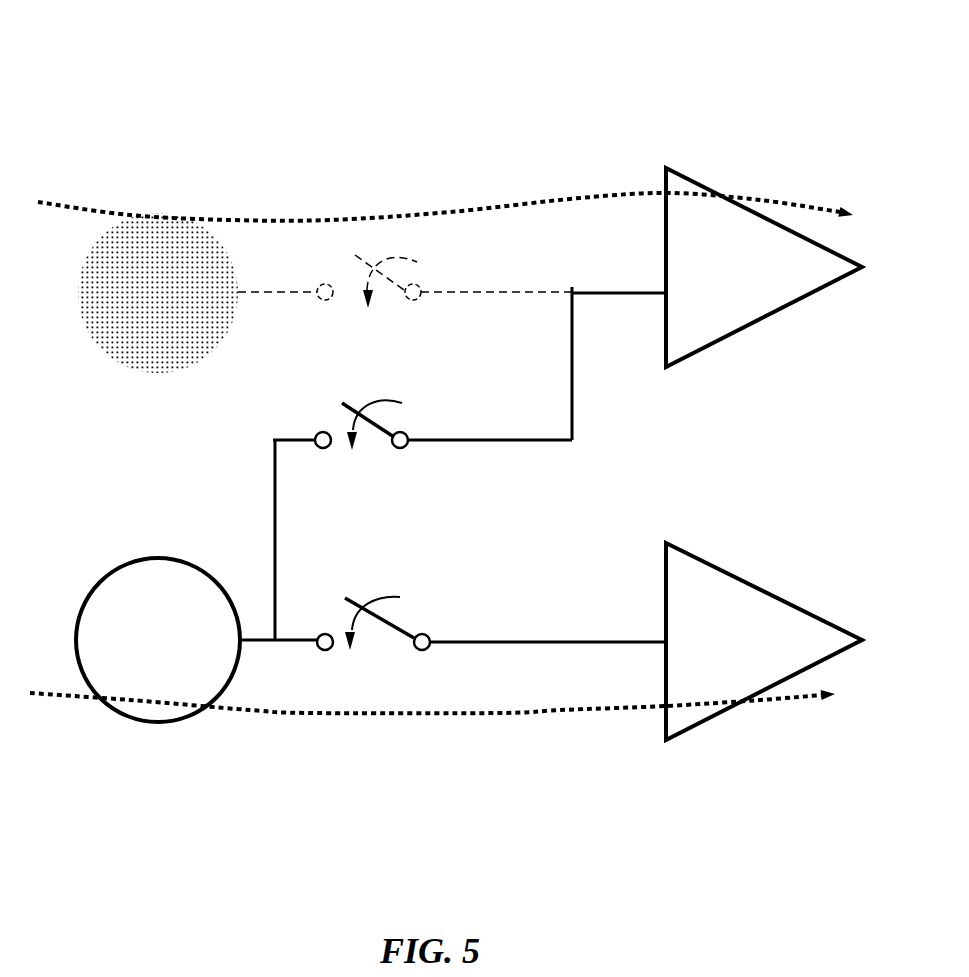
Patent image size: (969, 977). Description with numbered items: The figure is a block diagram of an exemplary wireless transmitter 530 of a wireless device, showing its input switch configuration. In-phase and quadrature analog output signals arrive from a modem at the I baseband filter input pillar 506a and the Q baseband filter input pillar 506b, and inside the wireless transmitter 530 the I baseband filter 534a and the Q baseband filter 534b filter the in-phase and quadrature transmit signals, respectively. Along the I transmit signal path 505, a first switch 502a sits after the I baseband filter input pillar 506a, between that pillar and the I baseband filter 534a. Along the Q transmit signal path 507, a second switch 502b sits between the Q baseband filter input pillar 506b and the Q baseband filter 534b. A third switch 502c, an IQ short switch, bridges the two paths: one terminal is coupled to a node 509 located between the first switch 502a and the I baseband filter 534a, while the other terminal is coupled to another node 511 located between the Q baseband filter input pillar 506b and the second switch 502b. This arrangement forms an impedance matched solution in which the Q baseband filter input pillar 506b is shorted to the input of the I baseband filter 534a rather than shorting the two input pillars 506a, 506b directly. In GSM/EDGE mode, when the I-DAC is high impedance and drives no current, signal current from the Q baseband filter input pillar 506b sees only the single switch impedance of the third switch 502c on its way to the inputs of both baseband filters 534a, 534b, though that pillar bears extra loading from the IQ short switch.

The wireless transmitter 530 is at (220, 80).
The I transmit signal path 505 is at (582, 198).
The Q transmit signal path 507 is at (505, 713).
The I baseband filter input pillar 506a is at (187, 306).
The Q baseband filter input pillar 506b is at (187, 653).
The first switch 502a is at (405, 297).
The second switch 502b is at (491, 645).
The third switch 502c is at (422, 443).
The node 509 is at (572, 287).
The another node 511 is at (275, 648).
The I baseband filter 534a is at (740, 281).
The Q baseband filter 534b is at (690, 653).